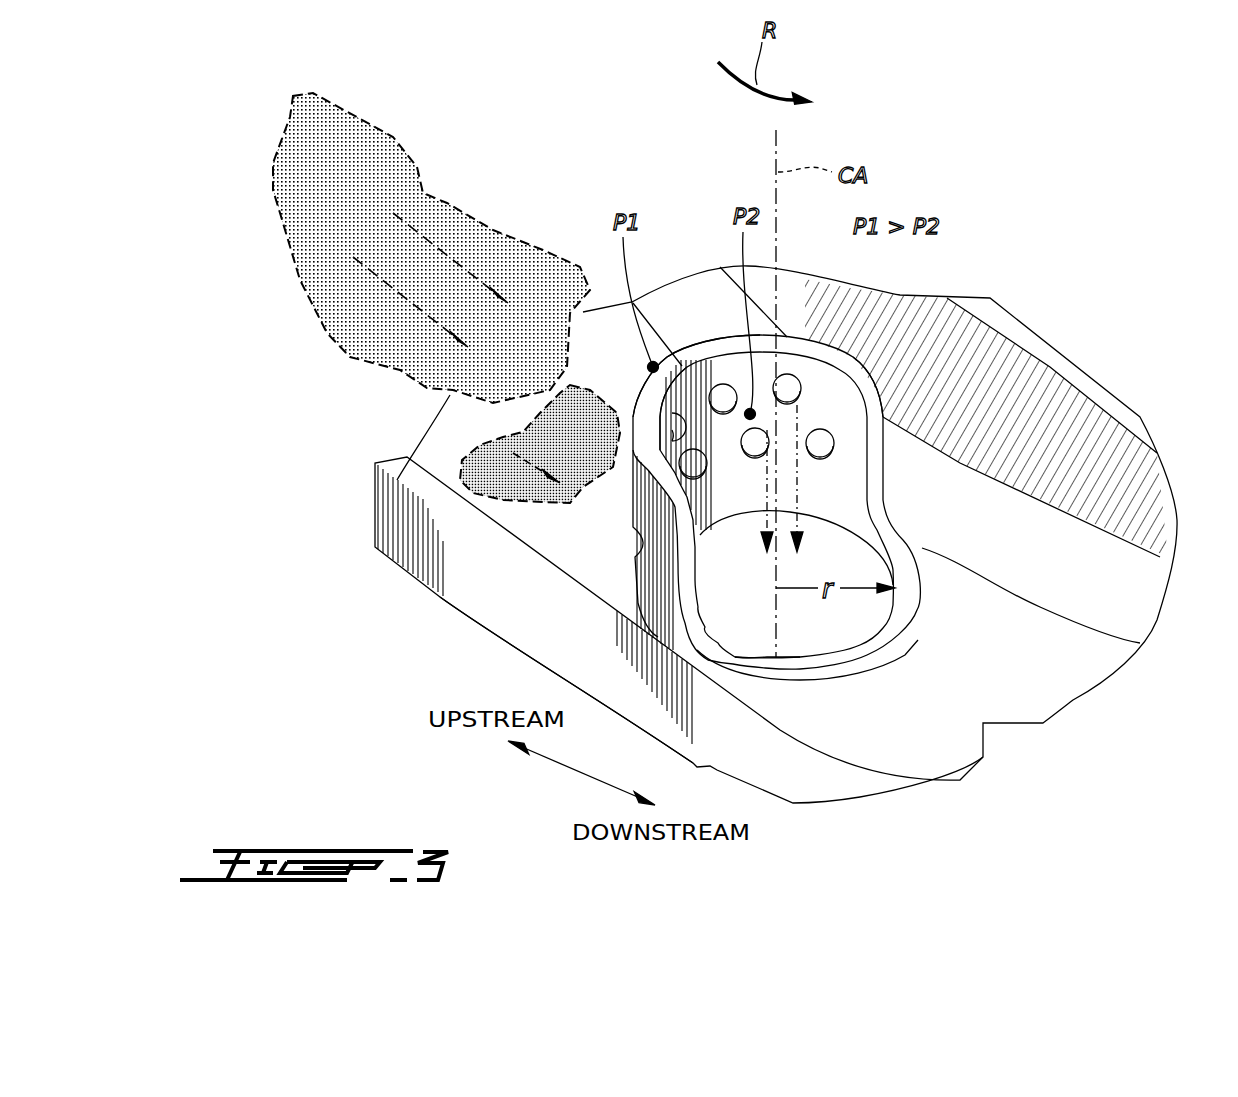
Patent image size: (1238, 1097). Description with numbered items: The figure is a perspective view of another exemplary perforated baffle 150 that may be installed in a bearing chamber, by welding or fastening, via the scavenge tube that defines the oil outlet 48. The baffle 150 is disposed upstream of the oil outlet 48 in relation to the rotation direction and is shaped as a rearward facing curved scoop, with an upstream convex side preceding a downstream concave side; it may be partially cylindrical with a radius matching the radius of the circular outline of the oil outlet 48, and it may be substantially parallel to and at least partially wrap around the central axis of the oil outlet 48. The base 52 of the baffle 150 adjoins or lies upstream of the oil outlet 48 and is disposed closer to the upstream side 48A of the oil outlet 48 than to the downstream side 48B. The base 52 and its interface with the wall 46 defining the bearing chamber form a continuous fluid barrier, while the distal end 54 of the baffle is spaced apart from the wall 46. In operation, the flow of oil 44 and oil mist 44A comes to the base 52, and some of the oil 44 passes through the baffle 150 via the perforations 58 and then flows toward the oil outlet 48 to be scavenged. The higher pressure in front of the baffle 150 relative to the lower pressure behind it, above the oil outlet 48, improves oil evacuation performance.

The oil mist 44A is at (340, 170).
The oil 44 is at (470, 483).
The wall 46 is at (600, 550).
The oil outlet 48 is at (838, 563).
The upstream side of oil outlet 48A is at (707, 540).
The downstream side of oil outlet 48B is at (862, 623).
The base 52 is at (690, 515).
The distal end 54 is at (713, 352).
The perforations 58 is at (835, 482).
The perforated baffle 150 is at (803, 367).